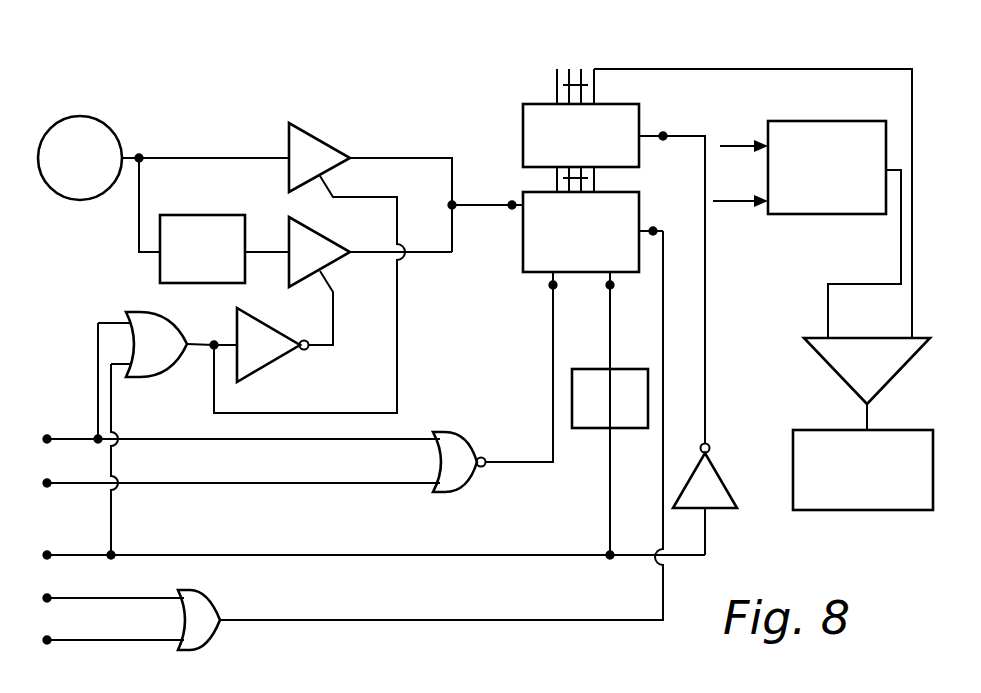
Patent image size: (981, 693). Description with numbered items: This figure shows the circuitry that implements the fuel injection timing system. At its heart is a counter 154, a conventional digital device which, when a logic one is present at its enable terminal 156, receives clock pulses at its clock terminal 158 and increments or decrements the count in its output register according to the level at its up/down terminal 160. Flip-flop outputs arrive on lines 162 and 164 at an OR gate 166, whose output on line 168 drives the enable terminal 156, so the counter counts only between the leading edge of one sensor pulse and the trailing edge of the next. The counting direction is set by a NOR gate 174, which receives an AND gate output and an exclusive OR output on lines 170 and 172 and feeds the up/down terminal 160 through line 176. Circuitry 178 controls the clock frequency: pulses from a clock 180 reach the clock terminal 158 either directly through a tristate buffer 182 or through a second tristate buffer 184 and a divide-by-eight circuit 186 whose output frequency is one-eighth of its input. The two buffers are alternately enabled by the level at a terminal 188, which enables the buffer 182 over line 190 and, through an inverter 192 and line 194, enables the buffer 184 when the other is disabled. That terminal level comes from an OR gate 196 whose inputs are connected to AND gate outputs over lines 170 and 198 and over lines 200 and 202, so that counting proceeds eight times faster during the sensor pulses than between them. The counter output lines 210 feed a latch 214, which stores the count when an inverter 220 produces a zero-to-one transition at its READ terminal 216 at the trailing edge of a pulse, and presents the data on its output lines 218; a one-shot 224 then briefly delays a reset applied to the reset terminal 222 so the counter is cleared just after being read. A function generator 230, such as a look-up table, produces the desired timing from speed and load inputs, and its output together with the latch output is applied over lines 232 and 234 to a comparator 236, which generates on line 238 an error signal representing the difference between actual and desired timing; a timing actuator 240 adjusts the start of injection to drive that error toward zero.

The counter 154 is at (532, 248).
The enable terminal 156 is at (653, 228).
The clock terminal 158 is at (512, 208).
The up/down terminal 160 is at (553, 286).
The line 162 is at (136, 597).
The line 164 is at (92, 640).
The OR gate 166 is at (222, 620).
The line 168 is at (540, 618).
The line 170 is at (60, 438).
The line 172 is at (63, 485).
The NOR gate 174 is at (453, 477).
The line 176 is at (553, 410).
The clock pulse frequency control circuitry 178 is at (191, 145).
The clock 180 is at (68, 180).
The tristate buffer 182 is at (305, 150).
The tristate buffer 184 is at (305, 243).
The divide-by-eight circuit 186 is at (183, 228).
The terminal 188 is at (214, 338).
The line 190 is at (397, 372).
The inverter 192 is at (258, 350).
The line 194 is at (333, 312).
The OR gate 196 is at (153, 358).
The line 198 is at (97, 336).
The line 200 is at (68, 557).
The line 202 is at (112, 460).
The counter output lines 210 is at (528, 181).
The latch circuit 214 is at (545, 113).
The READ input terminal 216 is at (663, 139).
The latch output register lines 218 is at (622, 88).
The inverter 220 is at (710, 483).
The reset terminal 222 is at (610, 287).
The one-shot 224 is at (594, 428).
The function generator 230 is at (803, 202).
The line 232 is at (913, 90).
The line 234 is at (867, 284).
The comparator 236 is at (818, 357).
The line 238 is at (860, 417).
The timing actuator 240 is at (855, 497).